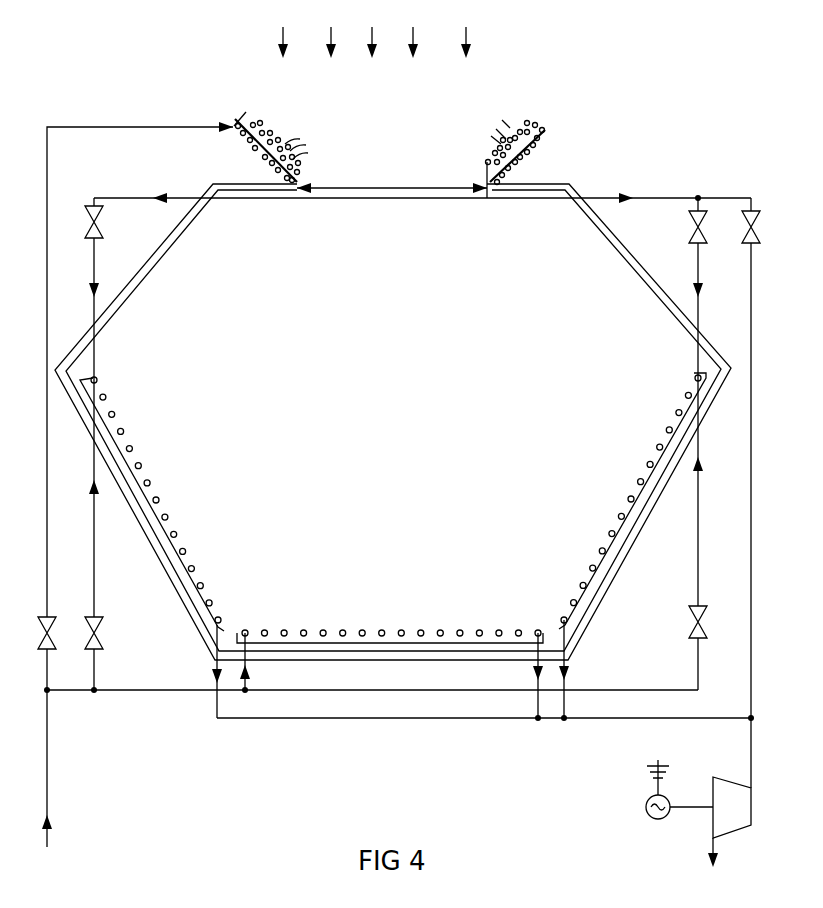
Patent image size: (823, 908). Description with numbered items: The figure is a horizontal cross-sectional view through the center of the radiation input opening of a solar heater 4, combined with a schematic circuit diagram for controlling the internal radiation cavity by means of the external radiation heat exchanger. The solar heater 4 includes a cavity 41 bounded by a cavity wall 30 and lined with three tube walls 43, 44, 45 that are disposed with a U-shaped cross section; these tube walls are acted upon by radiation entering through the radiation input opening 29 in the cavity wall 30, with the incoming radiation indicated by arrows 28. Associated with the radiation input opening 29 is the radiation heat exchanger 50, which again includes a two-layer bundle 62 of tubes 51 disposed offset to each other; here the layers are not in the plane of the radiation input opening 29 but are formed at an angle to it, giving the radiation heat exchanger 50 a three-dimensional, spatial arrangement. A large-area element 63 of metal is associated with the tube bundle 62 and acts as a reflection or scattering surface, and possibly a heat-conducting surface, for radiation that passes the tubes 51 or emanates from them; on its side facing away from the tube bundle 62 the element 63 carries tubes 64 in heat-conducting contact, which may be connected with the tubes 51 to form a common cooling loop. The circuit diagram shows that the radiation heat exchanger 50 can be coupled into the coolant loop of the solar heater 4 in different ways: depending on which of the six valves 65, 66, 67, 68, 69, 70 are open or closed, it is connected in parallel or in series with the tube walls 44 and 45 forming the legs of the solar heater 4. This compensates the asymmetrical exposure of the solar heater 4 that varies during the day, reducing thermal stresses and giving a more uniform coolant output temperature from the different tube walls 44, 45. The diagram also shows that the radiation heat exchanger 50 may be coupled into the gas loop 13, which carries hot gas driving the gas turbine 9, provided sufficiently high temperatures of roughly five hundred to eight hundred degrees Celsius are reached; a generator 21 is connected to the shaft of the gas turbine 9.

The solar heater 4 is at (565, 604).
The gas turbine 9 is at (720, 779).
The gas loop 13 is at (734, 699).
The generator 21 is at (651, 819).
The solar radiation 28 is at (401, 55).
The radiation input opening 29 is at (408, 190).
The cavity wall 30 is at (528, 192).
The cavity 41 is at (412, 383).
The tube wall 43 is at (388, 637).
The tube wall 44 is at (171, 523).
The tube wall 45 is at (658, 448).
The radiation heat exchanger 50 is at (526, 122).
The tubes 51 is at (397, 132).
The two-layer tube bundle 62 is at (289, 113).
The large-area element 63 is at (246, 106).
The tubes 64 is at (247, 137).
The valve 65 is at (53, 618).
The valve 66 is at (103, 630).
The valve 67 is at (100, 230).
The valve 68 is at (689, 217).
The valve 69 is at (744, 227).
The valve 70 is at (709, 625).